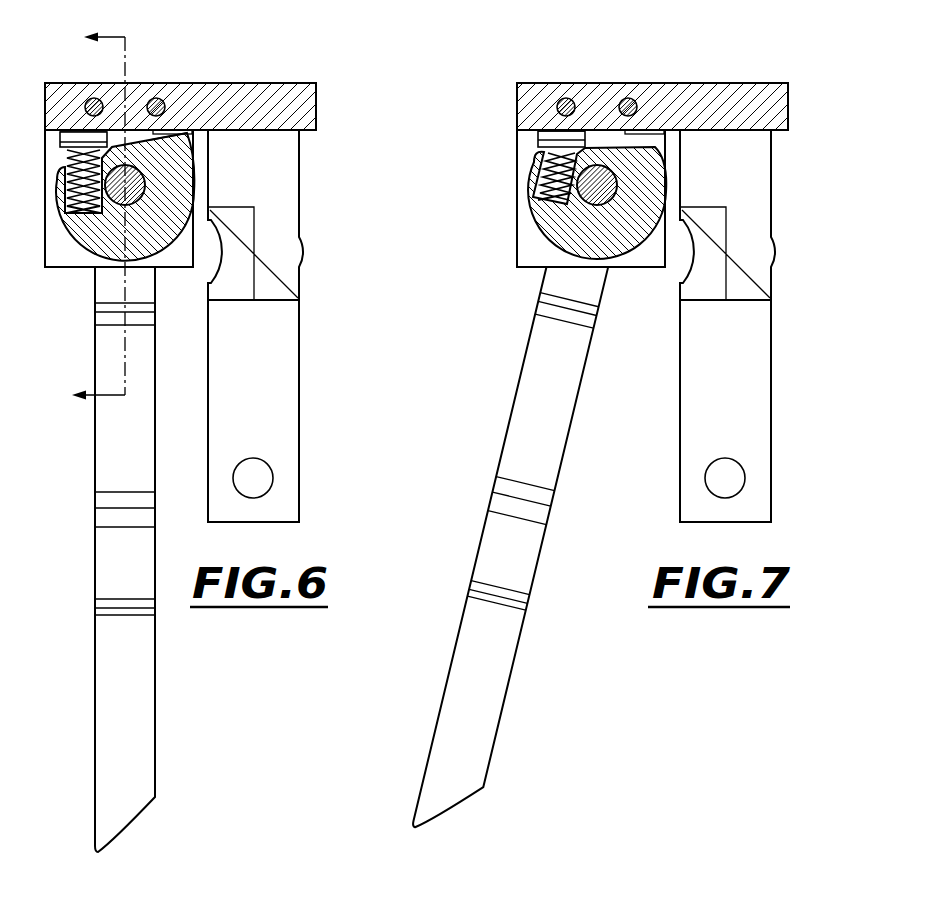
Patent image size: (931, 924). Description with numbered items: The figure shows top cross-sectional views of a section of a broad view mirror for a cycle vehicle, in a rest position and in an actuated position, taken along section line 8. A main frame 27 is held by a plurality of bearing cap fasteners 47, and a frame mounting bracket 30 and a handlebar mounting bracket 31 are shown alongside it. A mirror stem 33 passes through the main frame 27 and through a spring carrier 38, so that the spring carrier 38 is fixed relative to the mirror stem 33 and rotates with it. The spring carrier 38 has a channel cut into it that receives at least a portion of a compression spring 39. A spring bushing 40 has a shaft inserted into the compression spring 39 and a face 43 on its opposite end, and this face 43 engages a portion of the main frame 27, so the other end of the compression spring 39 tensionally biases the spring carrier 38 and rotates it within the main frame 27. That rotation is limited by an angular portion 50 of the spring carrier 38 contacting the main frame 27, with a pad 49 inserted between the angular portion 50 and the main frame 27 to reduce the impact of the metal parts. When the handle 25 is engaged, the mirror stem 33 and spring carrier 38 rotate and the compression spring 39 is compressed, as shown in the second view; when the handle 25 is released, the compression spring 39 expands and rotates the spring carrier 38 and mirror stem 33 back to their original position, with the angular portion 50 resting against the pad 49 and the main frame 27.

In FIG. 6, the section line 8- 8 is at (88, 216).
In FIG. 6, the handle 25 is at (140, 800).
In FIG. 7, the handle 25 is at (510, 547).
In FIG. 6, the main frame 27 is at (298, 83).
In FIG. 7, the main frame 27 is at (664, 90).
In FIG. 6, the frame mounting bracket 30 is at (288, 201).
In FIG. 7, the frame mounting bracket 30 is at (754, 215).
In FIG. 6, the handlebar mounting bracket 31 is at (293, 411).
In FIG. 7, the handlebar mounting bracket 31 is at (756, 411).
In FIG. 6, the mirror stem 33 is at (120, 195).
In FIG. 7, the mirror stem 33 is at (558, 231).
In FIG. 6, the spring carrier 38 is at (90, 227).
In FIG. 7, the spring carrier 38 is at (591, 195).
In FIG. 6, the compression spring 39 is at (66, 162).
In FIG. 7, the compression spring 39 is at (525, 176).
In FIG. 6, the spring bushing 40 is at (70, 139).
In FIG. 7, the spring bushing 40 is at (528, 144).
In FIG. 6, the face 43 is at (78, 130).
In FIG. 7, the face 43 is at (530, 120).
In FIG. 6, the bearing cap fasteners 47 is at (95, 98).
In FIG. 7, the bearing cap fasteners 47 is at (597, 86).
In FIG. 6, the pad 49 is at (175, 135).
In FIG. 6, the angular portion 50 is at (183, 150).